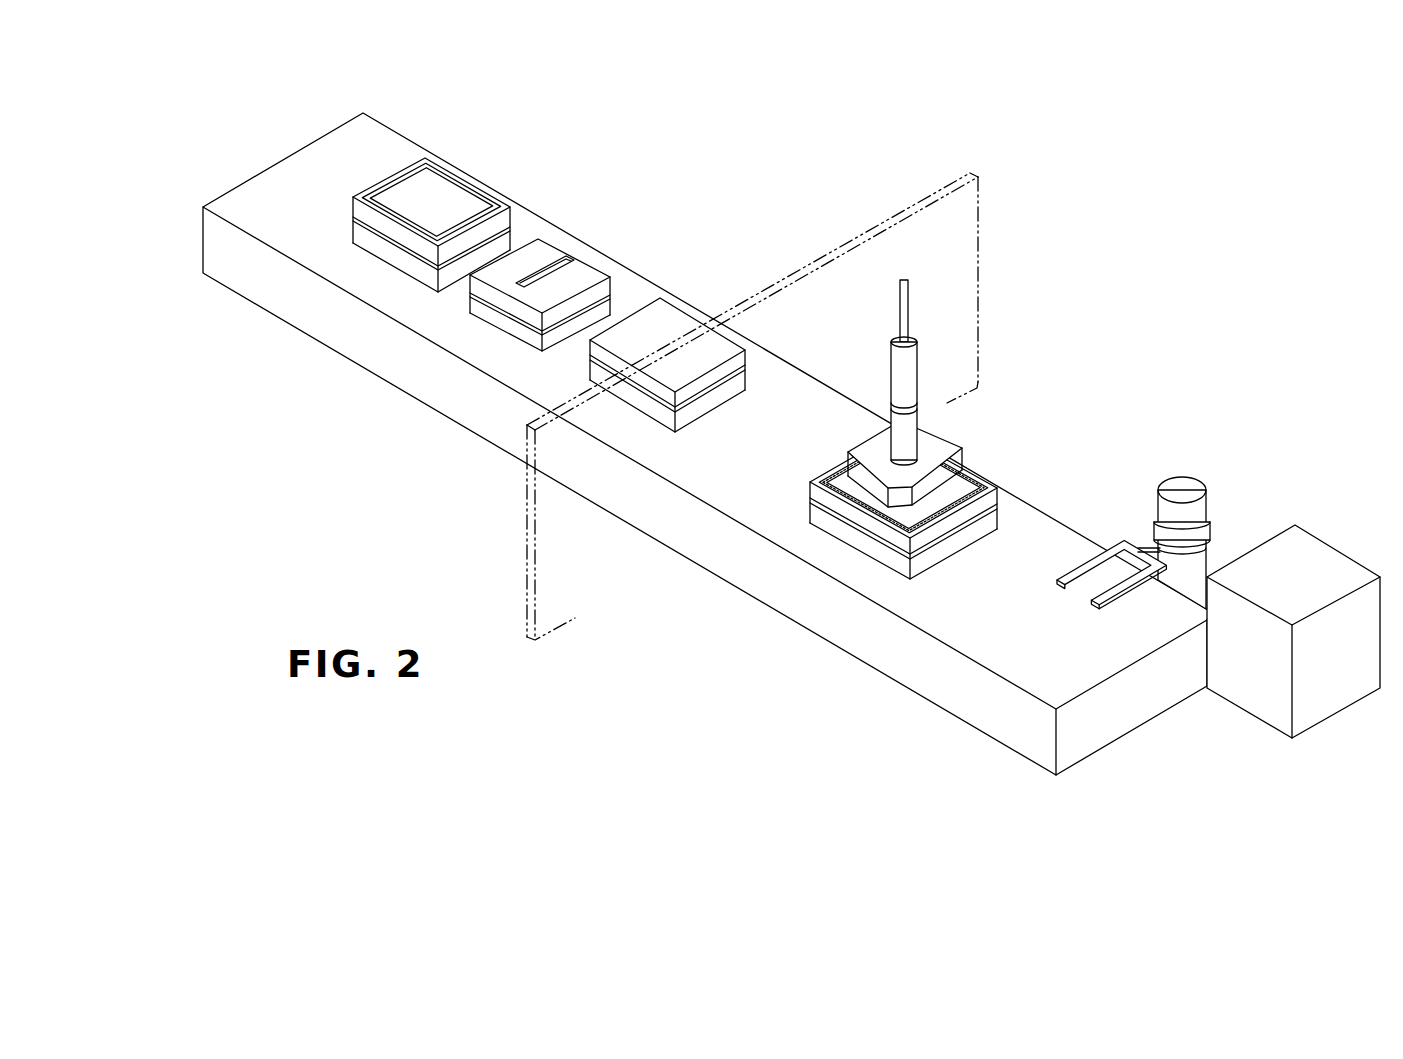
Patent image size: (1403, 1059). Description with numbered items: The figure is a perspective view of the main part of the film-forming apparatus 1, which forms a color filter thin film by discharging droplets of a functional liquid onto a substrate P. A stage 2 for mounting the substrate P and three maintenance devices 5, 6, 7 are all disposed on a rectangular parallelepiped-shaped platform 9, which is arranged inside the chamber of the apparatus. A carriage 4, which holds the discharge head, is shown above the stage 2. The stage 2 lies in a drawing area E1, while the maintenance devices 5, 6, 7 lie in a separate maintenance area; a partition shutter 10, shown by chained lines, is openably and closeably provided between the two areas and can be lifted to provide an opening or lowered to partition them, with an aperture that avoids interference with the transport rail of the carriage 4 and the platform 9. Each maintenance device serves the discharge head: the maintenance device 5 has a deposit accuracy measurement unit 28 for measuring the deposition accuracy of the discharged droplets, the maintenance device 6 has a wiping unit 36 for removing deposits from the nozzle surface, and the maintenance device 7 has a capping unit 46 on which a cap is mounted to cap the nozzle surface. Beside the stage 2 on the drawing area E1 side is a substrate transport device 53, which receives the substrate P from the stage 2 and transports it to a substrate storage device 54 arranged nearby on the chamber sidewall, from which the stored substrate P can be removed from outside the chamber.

The film-forming apparatus 1 is at (1068, 313).
The stage 2 is at (845, 553).
The carriage 4 is at (942, 448).
The maintenance device 5 is at (626, 417).
The maintenance device 6 is at (496, 342).
The maintenance device 7 is at (383, 272).
The platform 9 is at (668, 459).
The partition shutter 10 is at (955, 247).
The deposit accuracy measurement unit 28 is at (668, 317).
The wiping unit 36 is at (547, 247).
The capping unit 46 is at (453, 162).
The substrate transport device 53 is at (1193, 465).
The substrate storage device 54 is at (1312, 563).
The substrate P is at (980, 480).
The drawing area E1 is at (536, 128).